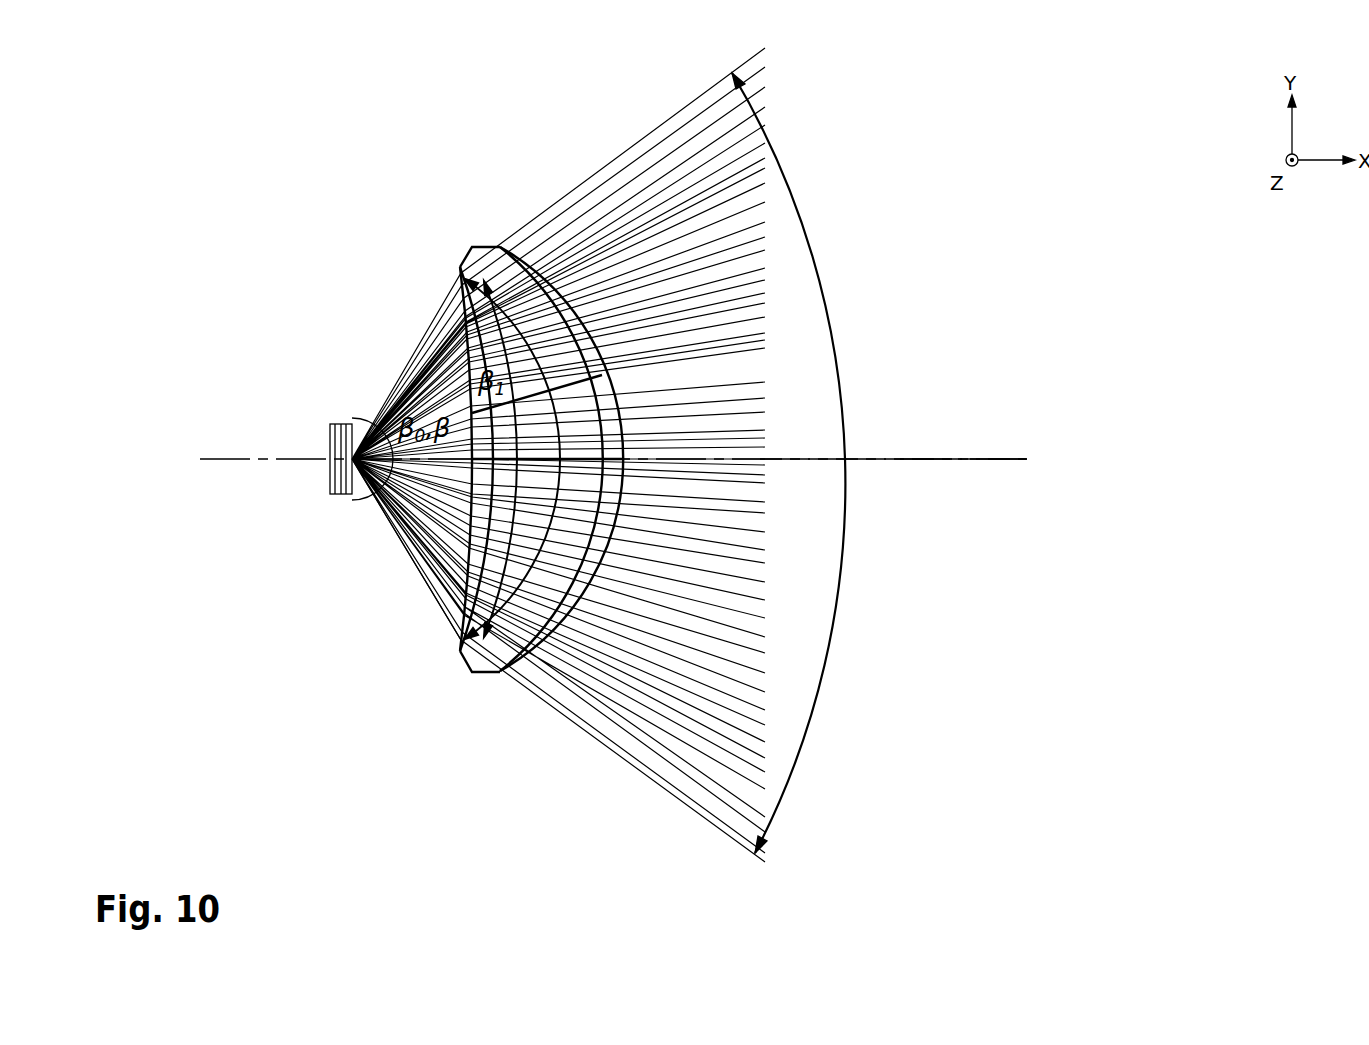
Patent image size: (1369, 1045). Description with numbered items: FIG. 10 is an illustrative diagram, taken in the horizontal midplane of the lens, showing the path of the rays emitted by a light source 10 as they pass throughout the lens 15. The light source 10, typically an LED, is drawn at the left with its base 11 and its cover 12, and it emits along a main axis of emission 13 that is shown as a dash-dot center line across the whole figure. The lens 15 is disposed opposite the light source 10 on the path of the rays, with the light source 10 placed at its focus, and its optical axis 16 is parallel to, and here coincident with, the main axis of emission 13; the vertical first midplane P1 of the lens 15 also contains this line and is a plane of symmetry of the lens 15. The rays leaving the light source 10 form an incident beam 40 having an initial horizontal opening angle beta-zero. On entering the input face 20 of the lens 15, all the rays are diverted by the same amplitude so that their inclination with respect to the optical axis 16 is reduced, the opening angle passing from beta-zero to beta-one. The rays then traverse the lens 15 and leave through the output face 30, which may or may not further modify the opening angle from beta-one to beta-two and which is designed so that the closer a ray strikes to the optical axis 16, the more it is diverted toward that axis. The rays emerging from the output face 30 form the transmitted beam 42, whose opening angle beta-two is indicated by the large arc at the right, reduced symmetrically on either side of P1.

The light source 10 is at (325, 412).
The base 11 is at (330, 434).
The cover 12 is at (330, 480).
The main axis of emission 13 is at (957, 462).
The lens 15 is at (525, 406).
The optical axis 16 is at (970, 515).
The input face 20 is at (445, 352).
The output face 30 is at (548, 268).
The incident beam 40 is at (392, 540).
The transmitted beam 42 is at (622, 150).
The vertical first midplane P1 is at (970, 515).